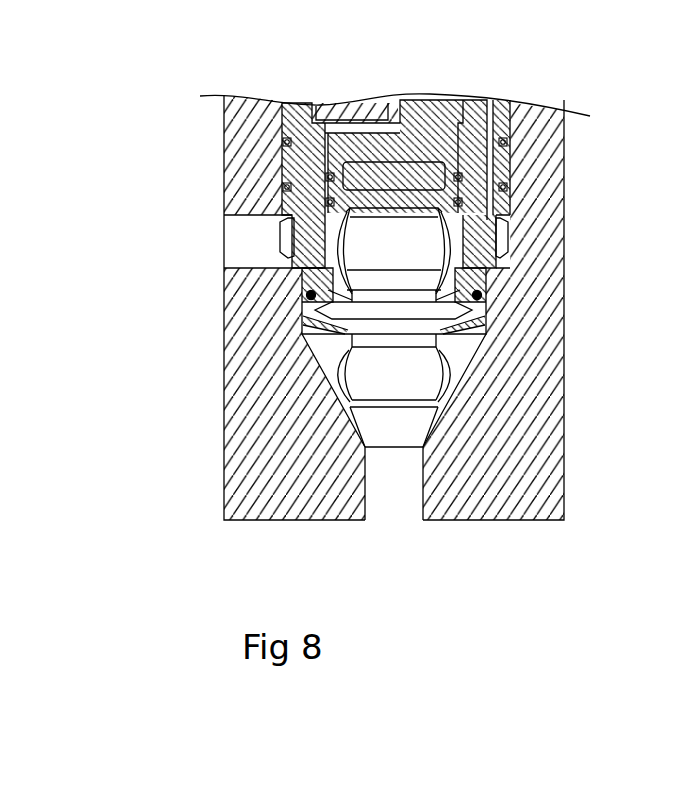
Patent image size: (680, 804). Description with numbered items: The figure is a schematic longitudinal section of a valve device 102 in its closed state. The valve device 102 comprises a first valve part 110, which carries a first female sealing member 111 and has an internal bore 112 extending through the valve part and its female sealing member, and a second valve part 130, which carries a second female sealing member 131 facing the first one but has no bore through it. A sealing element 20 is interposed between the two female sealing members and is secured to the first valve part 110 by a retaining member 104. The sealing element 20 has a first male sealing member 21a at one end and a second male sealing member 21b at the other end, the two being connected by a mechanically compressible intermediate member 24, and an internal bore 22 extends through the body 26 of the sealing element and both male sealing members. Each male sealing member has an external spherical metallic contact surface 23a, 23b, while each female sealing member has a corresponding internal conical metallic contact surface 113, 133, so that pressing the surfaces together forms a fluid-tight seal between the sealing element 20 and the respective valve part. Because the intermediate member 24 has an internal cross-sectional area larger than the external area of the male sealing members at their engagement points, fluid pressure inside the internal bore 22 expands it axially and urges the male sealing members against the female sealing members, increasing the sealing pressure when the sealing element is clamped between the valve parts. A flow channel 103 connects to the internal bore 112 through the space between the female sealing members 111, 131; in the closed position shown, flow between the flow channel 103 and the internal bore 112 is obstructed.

The valve device 102 is at (554, 88).
The first valve part 110 is at (547, 480).
The flow channel 103 is at (243, 237).
The second valve part 130 is at (418, 172).
The second female sealing member 131 is at (300, 207).
The conical contact surface 133 is at (290, 261).
The sealing element 20 is at (458, 283).
The retaining member 104 is at (302, 277).
The internal bore 22 is at (376, 245).
The second male sealing member 21b is at (450, 227).
The spherical contact surface 23b is at (455, 252).
The intermediate member 24 is at (470, 324).
The body 26 is at (452, 342).
The first male sealing member 21a is at (455, 385).
The spherical contact surface 23a is at (458, 372).
The first female sealing member 111 is at (332, 398).
The conical contact surface 113 is at (357, 423).
The internal bore 112 is at (405, 507).